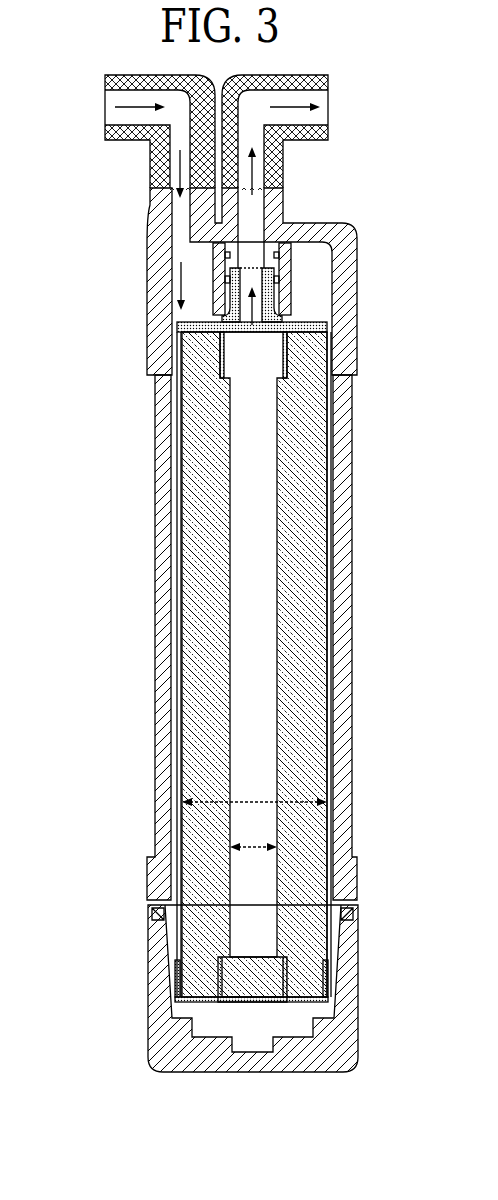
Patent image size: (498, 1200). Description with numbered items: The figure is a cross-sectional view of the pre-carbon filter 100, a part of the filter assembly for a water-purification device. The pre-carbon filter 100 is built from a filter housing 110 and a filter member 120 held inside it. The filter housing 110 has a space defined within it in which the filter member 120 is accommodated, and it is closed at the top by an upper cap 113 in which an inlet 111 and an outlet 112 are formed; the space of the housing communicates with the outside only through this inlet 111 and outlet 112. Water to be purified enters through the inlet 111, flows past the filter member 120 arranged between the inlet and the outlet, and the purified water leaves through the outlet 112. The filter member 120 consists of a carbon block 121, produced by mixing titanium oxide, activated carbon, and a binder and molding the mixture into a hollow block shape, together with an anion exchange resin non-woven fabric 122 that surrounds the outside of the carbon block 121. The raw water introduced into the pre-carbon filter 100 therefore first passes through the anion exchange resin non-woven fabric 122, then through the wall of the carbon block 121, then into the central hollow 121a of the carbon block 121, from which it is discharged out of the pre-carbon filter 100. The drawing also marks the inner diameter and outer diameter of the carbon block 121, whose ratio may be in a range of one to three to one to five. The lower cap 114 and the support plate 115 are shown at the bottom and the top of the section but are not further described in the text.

The pre-carbon filter 100 is at (361, 212).
The filter housing 110 is at (344, 466).
The inlet 111 is at (105, 103).
The outlet 112 is at (328, 101).
The upper cap 113 is at (356, 273).
The lower cap 114 is at (333, 998).
The support plate 115 is at (327, 327).
The filter member 120 is at (420, 533).
The carbon block 121 is at (316, 700).
The hollow 121a is at (261, 390).
The anion exchange resin non-woven fabric 122 is at (182, 513).